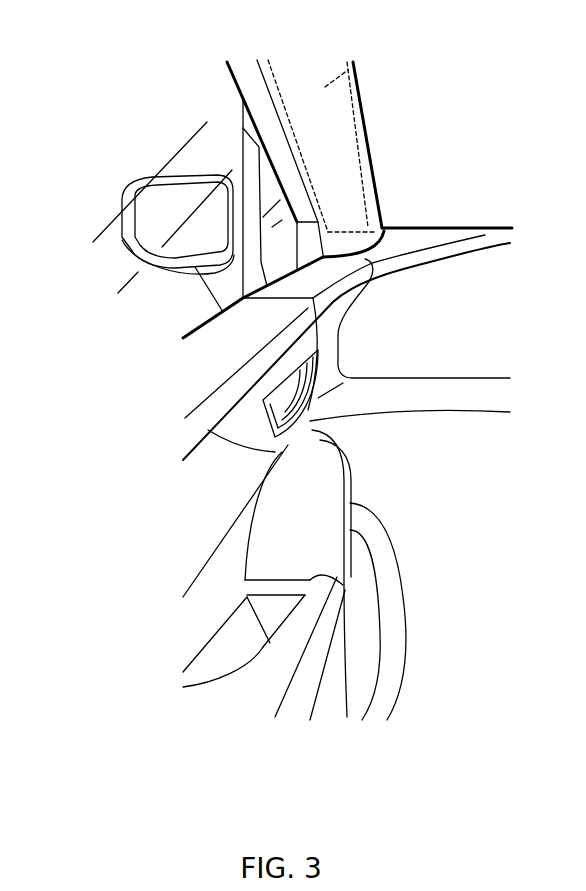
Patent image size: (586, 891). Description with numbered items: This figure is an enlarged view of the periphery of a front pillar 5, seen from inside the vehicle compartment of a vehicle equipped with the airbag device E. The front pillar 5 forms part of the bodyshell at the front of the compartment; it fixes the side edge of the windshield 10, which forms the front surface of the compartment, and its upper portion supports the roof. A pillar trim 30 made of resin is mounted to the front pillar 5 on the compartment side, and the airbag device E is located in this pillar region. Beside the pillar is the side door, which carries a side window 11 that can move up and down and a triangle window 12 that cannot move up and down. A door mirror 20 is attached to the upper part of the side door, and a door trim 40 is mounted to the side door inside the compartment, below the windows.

The windshield 10 is at (496, 80).
The side window 11 is at (167, 137).
The triangle window 12 is at (242, 127).
The door mirror 20 is at (137, 237).
The pillar trim 30 is at (363, 102).
The front pillar 5 is at (368, 138).
The door trim 40 is at (205, 363).
The airbag device E is at (358, 68).